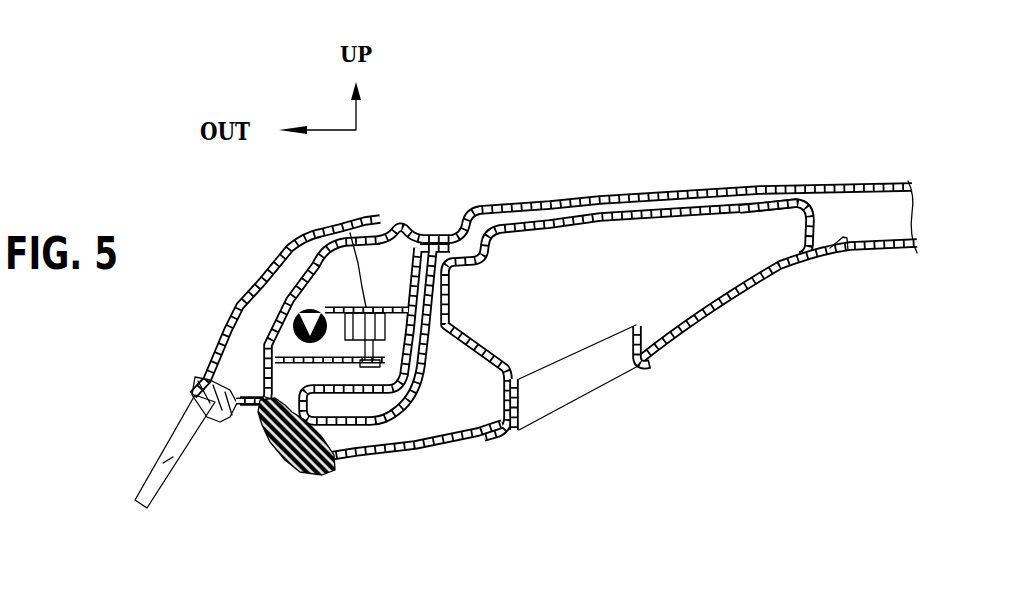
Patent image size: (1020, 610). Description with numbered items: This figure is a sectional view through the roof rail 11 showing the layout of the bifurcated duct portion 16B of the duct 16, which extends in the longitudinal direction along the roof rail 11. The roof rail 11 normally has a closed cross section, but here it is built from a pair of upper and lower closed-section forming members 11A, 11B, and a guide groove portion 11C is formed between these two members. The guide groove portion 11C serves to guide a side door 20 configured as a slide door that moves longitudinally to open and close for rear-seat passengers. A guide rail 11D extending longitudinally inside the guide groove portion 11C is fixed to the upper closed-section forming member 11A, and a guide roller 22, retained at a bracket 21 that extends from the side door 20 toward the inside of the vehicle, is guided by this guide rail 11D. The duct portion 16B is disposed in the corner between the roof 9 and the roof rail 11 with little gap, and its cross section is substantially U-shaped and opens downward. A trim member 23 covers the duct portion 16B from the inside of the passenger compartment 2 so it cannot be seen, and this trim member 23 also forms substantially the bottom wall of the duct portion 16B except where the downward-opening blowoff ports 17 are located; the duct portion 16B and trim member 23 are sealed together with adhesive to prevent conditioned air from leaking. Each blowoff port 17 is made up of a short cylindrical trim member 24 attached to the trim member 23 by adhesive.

The passenger compartment 2 is at (673, 521).
The roof 9 is at (681, 191).
The roof rail 11 is at (407, 230).
The upper closed-section forming member 11A is at (400, 233).
The lower closed-section forming member 11B is at (398, 402).
The guide groove portion 11C is at (335, 365).
The guide rail 11D is at (390, 328).
The duct 16 is at (547, 202).
The bifurcated duct portion 16B is at (758, 205).
The blowoff port 17 is at (568, 382).
The side door 20 is at (211, 360).
The bracket 21 is at (287, 327).
The guide roller 22 is at (347, 236).
The trim member 23 is at (747, 292).
The short cylindrical trim member 24 is at (653, 365).